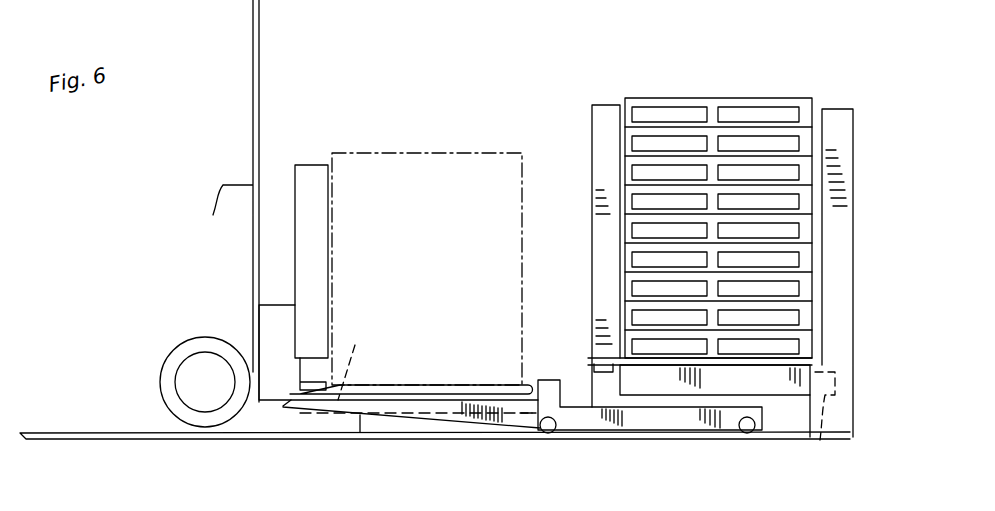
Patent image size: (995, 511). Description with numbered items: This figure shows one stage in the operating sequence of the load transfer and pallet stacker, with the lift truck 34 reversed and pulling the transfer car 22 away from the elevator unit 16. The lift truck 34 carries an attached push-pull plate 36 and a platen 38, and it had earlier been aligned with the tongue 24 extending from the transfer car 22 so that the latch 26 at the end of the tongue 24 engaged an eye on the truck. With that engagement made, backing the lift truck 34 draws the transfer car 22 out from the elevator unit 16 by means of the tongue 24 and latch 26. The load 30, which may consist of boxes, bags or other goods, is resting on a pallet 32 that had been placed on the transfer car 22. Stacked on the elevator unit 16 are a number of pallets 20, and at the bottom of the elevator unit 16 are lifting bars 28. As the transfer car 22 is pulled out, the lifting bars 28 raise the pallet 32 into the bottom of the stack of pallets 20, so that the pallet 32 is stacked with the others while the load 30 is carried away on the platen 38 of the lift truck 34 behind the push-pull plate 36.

The elevator unit 16 is at (860, 122).
The pallets 20 is at (677, 228).
The transfer car 22 is at (645, 415).
The tongue 24 is at (442, 410).
The latch 26 is at (357, 360).
The lifting bars 28 is at (820, 440).
The load 30 is at (452, 262).
The pallet 32 is at (623, 348).
The lift truck 34 is at (262, 72).
The push-pull plate 36 is at (317, 212).
The platen 38 is at (408, 394).